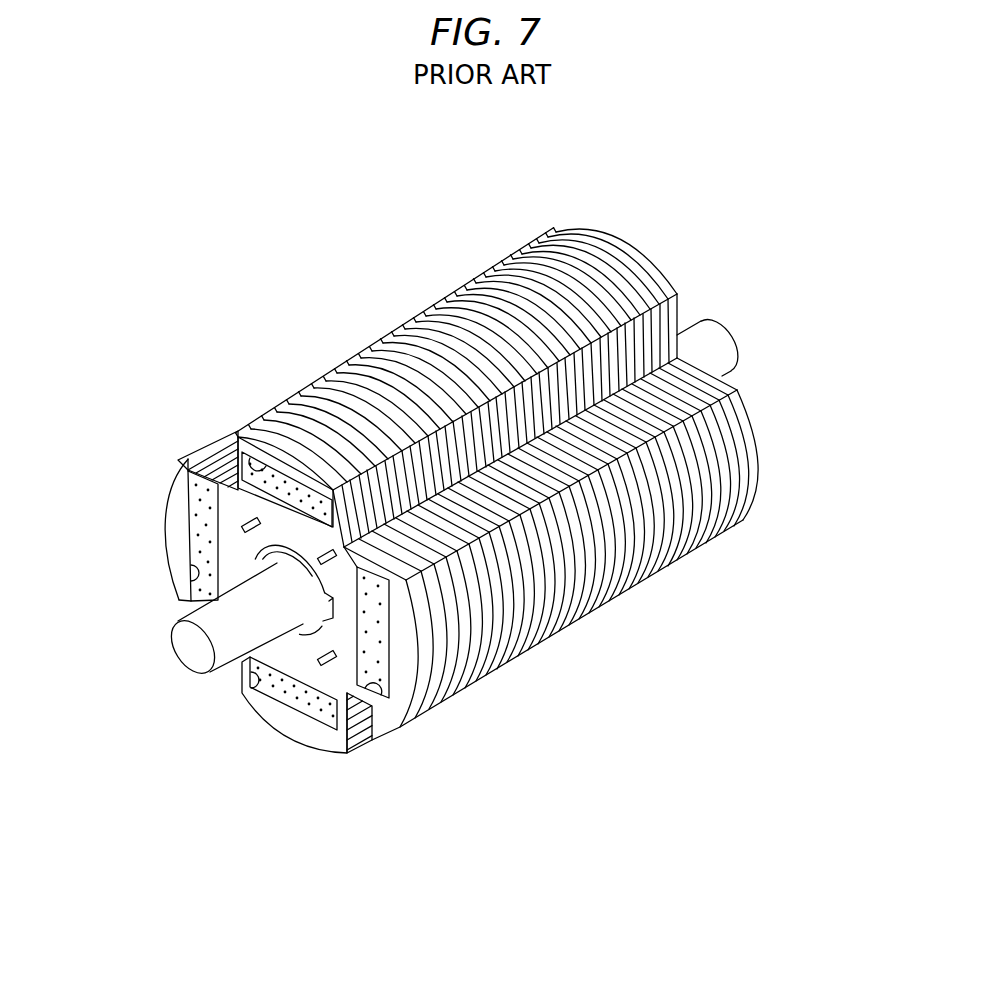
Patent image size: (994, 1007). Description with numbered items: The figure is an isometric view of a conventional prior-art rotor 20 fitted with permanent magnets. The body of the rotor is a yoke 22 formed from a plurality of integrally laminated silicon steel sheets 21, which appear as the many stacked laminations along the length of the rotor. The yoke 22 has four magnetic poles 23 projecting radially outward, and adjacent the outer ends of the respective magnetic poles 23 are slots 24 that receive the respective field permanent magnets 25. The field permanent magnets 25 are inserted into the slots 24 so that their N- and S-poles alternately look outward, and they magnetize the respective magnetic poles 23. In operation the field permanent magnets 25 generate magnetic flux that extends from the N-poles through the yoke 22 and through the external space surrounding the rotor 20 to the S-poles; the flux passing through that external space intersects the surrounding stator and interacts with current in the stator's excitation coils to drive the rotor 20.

The rotor 20 is at (562, 172).
The laminated silicon steel sheets 21 is at (645, 578).
The yoke 22 is at (760, 428).
The magnetic poles 23 is at (282, 460).
The slots 24 is at (232, 440).
The field permanent magnets 25 is at (207, 502).